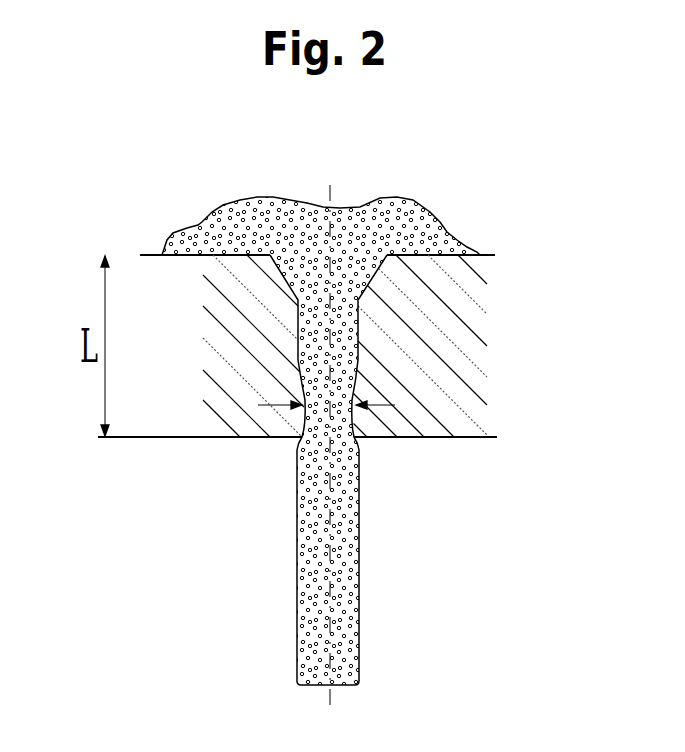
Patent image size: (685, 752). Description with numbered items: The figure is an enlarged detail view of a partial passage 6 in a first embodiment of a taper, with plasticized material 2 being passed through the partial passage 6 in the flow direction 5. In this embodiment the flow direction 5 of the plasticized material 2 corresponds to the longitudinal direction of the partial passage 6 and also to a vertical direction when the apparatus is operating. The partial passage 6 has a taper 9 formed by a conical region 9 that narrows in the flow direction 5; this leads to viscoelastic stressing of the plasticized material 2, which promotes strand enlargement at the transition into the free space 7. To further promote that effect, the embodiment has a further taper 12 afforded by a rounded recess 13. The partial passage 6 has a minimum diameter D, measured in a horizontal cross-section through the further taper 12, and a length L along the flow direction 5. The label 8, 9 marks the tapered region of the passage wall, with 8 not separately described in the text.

The plasticized material 2 is at (410, 200).
The flow direction 5 is at (187, 287).
The partial passage 6 is at (360, 361).
The free space 7 is at (429, 554).
The first component 8 is at (511, 346).
The taper 9 is at (400, 281).
The further taper 12 is at (451, 454).
The rounded recess 13 is at (388, 423).